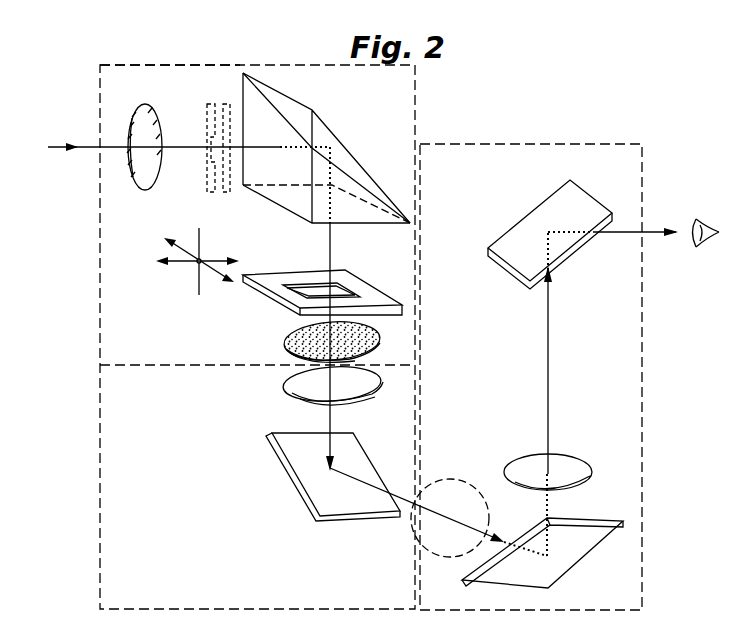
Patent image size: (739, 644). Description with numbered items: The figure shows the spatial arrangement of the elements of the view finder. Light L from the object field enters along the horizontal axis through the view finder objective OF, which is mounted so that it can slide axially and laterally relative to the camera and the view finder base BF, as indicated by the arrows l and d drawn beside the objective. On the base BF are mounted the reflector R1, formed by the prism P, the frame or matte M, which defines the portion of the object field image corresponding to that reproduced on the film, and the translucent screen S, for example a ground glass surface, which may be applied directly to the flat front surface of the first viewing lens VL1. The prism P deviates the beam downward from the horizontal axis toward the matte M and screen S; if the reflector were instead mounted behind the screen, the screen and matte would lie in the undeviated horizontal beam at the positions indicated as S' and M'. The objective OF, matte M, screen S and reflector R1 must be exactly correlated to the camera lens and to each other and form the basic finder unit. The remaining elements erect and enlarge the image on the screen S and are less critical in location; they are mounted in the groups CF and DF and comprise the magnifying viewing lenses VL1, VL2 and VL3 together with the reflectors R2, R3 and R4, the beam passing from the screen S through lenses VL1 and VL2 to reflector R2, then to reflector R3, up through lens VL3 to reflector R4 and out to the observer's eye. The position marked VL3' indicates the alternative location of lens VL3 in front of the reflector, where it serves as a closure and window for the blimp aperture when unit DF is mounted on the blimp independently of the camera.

The light beam L is at (62, 147).
The view finder objective OF is at (149, 111).
The view finder base BF is at (210, 45).
The matte location in undeviated beam M' is at (233, 106).
The screen location in undeviated beam S' is at (258, 115).
The prism P is at (342, 134).
The reflector R1 is at (354, 181).
The arrow indicating sliding movement l is at (194, 250).
The axis d is at (180, 266).
The matte M is at (307, 292).
The translucent screen S is at (316, 341).
The magnifying viewing lens VL1 is at (297, 356).
The magnifying viewing lens VL2 is at (312, 384).
The reflector R2 is at (305, 463).
The group of erecting and enlarging elements CF is at (105, 543).
The alternative position of lens VL3 VL3' is at (404, 521).
The reflector R3 is at (565, 566).
The magnifying viewing lens VL3 is at (600, 466).
The reflector R4 is at (572, 194).
The unit DF is at (615, 596).